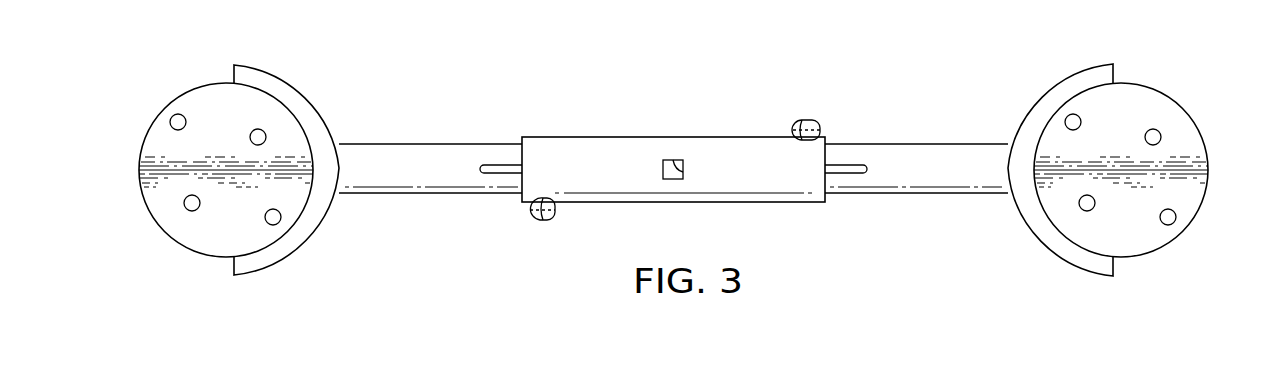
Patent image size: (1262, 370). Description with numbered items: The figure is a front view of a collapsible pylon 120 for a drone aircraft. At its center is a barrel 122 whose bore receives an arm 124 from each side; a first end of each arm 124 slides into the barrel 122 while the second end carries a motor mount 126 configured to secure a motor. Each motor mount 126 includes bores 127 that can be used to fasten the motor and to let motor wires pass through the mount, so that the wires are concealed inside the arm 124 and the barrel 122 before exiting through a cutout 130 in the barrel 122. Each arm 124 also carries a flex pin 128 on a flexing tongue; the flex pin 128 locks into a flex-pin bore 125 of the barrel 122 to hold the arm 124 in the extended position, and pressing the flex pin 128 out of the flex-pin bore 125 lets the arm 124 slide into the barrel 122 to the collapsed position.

The collapsible pylon 120 is at (482, 68).
The barrel 122 is at (588, 137).
The arm 124 is at (423, 194).
The flex-pin bore 125 is at (794, 128).
The motor mount 126 is at (278, 78).
The bore 127 is at (184, 204).
The flex pin 128 is at (808, 120).
The cutout 130 is at (673, 160).